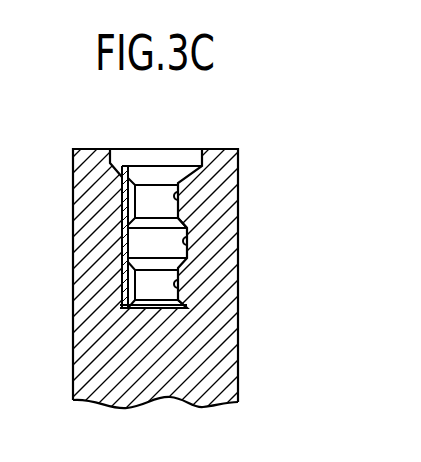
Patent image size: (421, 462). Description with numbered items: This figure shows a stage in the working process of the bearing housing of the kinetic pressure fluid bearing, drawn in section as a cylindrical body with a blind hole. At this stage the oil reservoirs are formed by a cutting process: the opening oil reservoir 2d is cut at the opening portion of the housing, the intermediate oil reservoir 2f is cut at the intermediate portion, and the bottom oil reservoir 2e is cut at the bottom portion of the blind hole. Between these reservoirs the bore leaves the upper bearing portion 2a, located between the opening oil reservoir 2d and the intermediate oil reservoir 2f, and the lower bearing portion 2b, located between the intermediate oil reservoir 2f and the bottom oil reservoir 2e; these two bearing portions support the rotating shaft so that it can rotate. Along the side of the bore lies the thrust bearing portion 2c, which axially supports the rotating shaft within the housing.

The upper bearing portion 2a is at (176, 197).
The lower bearing portion 2b is at (180, 283).
The thrust bearing portion 2c is at (124, 173).
The opening oil reservoir 2d is at (156, 154).
The bottom oil reservoir 2e is at (170, 310).
The intermediate oil reservoir 2f is at (186, 238).